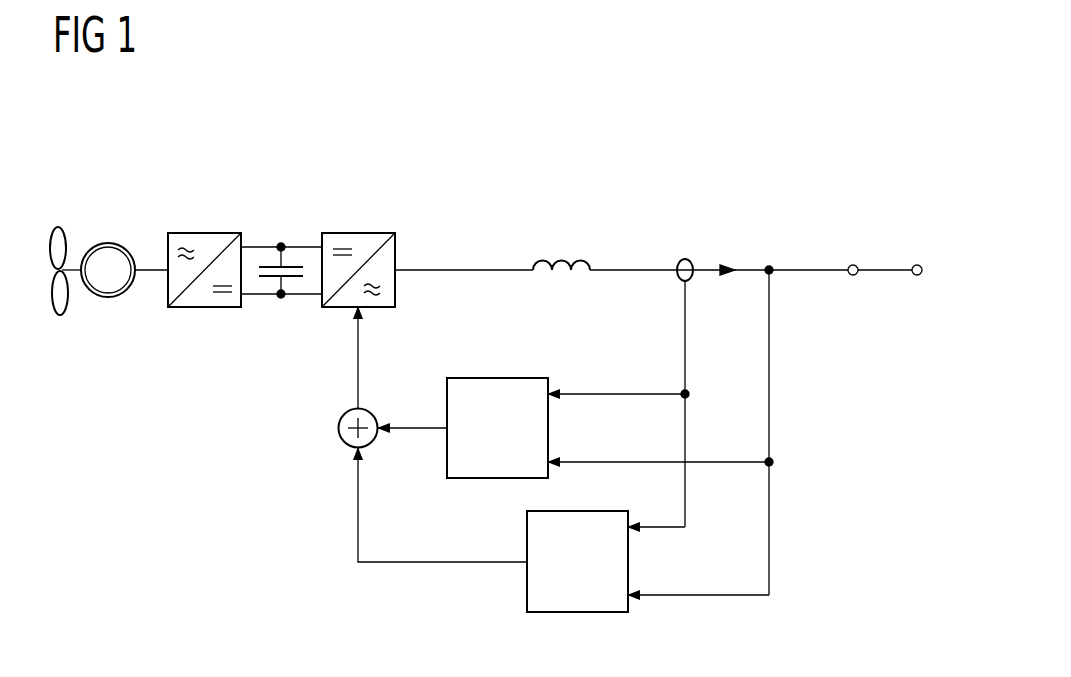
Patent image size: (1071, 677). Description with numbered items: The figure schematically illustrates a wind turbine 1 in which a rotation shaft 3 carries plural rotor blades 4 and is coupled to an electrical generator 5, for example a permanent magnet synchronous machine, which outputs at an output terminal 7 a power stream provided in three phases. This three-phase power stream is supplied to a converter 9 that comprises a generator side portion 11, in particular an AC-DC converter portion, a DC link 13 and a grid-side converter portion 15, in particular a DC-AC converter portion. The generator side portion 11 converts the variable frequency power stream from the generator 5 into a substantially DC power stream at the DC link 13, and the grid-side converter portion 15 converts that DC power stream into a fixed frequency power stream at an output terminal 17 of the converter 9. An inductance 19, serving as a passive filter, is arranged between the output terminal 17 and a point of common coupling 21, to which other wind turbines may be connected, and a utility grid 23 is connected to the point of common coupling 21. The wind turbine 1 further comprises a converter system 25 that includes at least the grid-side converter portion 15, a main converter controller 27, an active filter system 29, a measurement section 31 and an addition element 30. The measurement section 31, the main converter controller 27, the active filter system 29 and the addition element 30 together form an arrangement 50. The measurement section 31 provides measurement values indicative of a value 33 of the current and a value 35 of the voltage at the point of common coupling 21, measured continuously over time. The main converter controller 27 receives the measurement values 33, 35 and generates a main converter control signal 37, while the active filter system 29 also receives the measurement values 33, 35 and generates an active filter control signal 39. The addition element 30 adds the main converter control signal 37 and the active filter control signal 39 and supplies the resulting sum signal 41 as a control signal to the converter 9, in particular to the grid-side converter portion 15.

The wind turbine 1 is at (853, 122).
The rotation shaft 3 is at (69, 268).
The rotor blades 4 is at (58, 228).
The electrical generator 5 is at (107, 244).
The output terminal 7 is at (137, 263).
The converter 9 is at (168, 168).
The generator side portion 11 is at (205, 233).
The DC link 13 is at (285, 318).
The grid-side converter portion 15 is at (357, 233).
The output terminal 17 is at (397, 268).
The inductance 19 is at (577, 262).
The point of common coupling 21 is at (851, 264).
The utility grid 23 is at (915, 264).
The converter system 25 is at (250, 518).
The main converter controller 27 is at (496, 378).
The active filter system 29 is at (527, 589).
The addition element 30 is at (338, 427).
The measurement section 31 is at (668, 212).
The value of the current 33 is at (553, 392).
The value of the voltage 35 is at (553, 459).
The main converter control signal 37 is at (379, 420).
The active filter control signal 39 is at (350, 446).
The sum signal 41 is at (366, 310).
The arrangement 50 is at (822, 493).